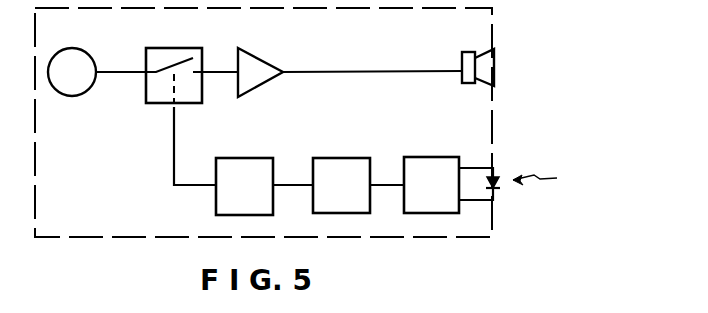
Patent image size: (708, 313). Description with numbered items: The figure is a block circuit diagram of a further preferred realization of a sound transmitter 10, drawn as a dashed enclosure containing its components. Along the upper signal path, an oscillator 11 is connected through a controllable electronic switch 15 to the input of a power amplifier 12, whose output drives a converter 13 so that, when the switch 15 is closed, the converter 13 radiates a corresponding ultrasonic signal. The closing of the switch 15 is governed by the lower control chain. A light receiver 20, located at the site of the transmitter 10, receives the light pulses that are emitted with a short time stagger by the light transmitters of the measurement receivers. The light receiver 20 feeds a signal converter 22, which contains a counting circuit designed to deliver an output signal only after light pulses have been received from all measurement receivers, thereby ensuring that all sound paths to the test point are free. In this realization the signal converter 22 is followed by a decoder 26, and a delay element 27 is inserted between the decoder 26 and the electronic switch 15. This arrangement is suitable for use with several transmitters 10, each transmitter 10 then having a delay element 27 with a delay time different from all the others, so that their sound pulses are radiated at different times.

The sound transmitter 10 is at (476, 14).
The oscillator 11 is at (72, 60).
The power amplifier 12 is at (253, 68).
The converter 13 is at (490, 60).
The controllable switch 15 is at (163, 58).
The light receiver 20 is at (498, 197).
The signal converter 22 is at (428, 175).
The decoder 26 is at (345, 172).
The delay element 27 is at (230, 202).